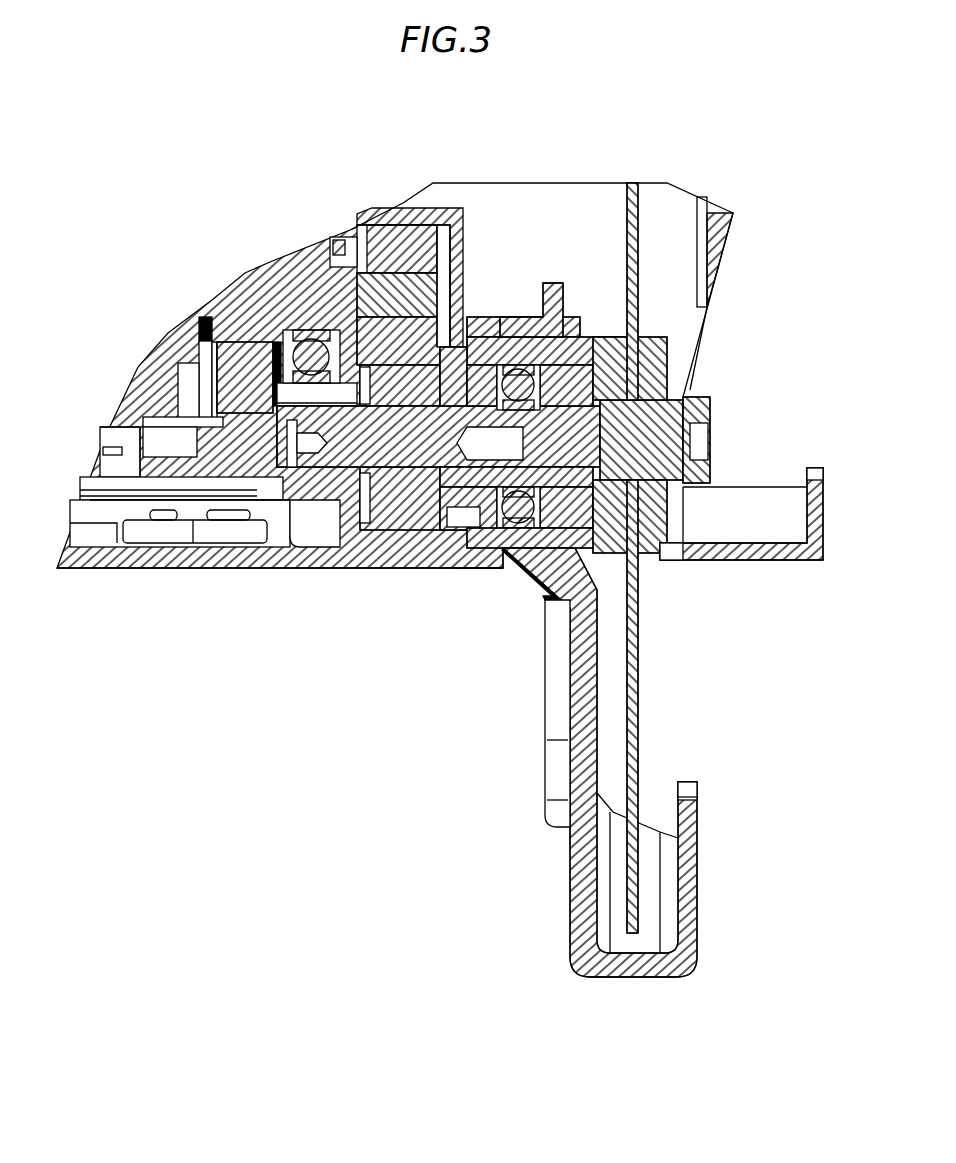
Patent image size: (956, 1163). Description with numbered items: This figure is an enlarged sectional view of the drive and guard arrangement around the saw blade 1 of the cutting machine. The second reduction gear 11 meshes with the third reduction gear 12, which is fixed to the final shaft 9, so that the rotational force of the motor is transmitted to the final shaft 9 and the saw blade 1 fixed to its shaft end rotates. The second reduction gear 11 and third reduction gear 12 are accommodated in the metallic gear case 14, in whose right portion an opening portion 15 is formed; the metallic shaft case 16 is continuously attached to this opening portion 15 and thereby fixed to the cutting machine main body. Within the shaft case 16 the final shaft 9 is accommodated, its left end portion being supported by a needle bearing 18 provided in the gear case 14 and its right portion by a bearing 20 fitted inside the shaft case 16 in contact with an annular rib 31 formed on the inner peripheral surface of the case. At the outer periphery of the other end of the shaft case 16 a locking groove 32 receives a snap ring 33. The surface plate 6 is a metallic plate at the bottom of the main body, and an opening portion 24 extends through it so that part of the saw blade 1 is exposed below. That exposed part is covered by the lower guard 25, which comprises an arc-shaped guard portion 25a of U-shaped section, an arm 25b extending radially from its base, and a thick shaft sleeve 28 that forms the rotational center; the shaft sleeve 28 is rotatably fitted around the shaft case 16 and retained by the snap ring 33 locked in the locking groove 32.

The saw blade 1 is at (637, 723).
The surface plate 6 is at (180, 568).
The final shaft 9 is at (397, 470).
The second reduction gear 11 is at (357, 226).
The third reduction gear 12 is at (440, 510).
The gear case 14 is at (435, 215).
The opening portion 15 is at (458, 340).
The shaft case 16 is at (567, 307).
The needle bearing 18 is at (307, 480).
The bearing 20 is at (482, 560).
The opening portion 24 is at (737, 560).
The lower guard 25 is at (562, 853).
The guard portion 25a is at (697, 900).
The arm 25b is at (570, 717).
The shaft sleeve 28 is at (552, 285).
The annular rib 31 is at (673, 443).
The locking groove 32 is at (578, 355).
The snap ring 33 is at (573, 345).